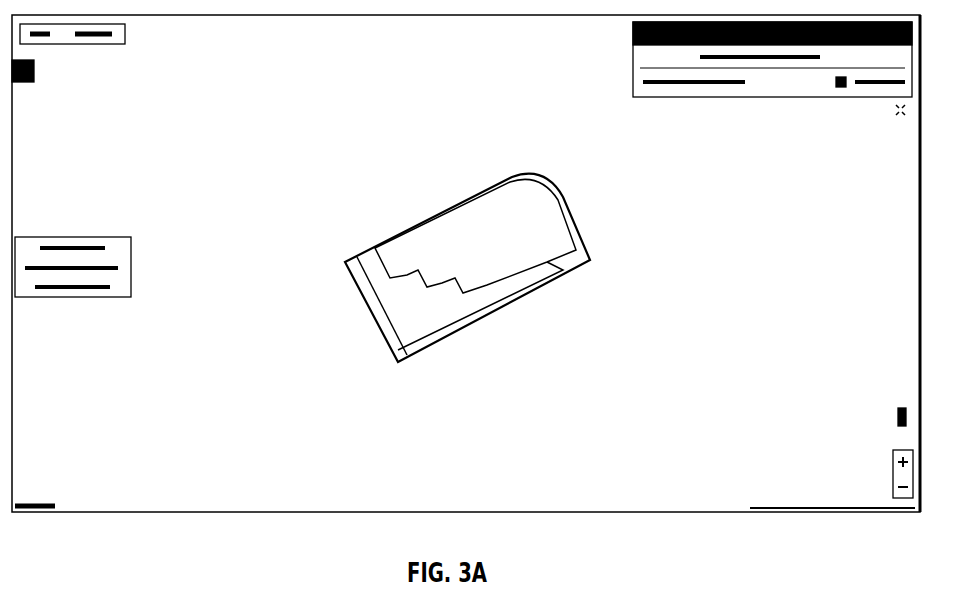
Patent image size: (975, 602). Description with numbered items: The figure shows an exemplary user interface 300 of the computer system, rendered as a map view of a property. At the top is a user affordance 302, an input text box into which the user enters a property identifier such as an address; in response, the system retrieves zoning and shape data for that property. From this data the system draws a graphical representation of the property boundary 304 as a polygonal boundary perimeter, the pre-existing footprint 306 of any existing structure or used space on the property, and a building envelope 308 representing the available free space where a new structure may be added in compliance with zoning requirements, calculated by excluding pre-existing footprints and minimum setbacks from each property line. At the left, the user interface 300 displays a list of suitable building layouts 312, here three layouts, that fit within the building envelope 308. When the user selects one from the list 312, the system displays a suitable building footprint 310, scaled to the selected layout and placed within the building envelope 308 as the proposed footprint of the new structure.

The user interface 300 is at (223, 72).
The user affordance 302 is at (633, 43).
The property boundary 304 is at (452, 205).
The pre-existing footprint 306 is at (513, 241).
The building envelope 308 is at (487, 307).
The suitable building footprint 310 is at (413, 323).
The list of suitable building layouts 312 is at (86, 232).